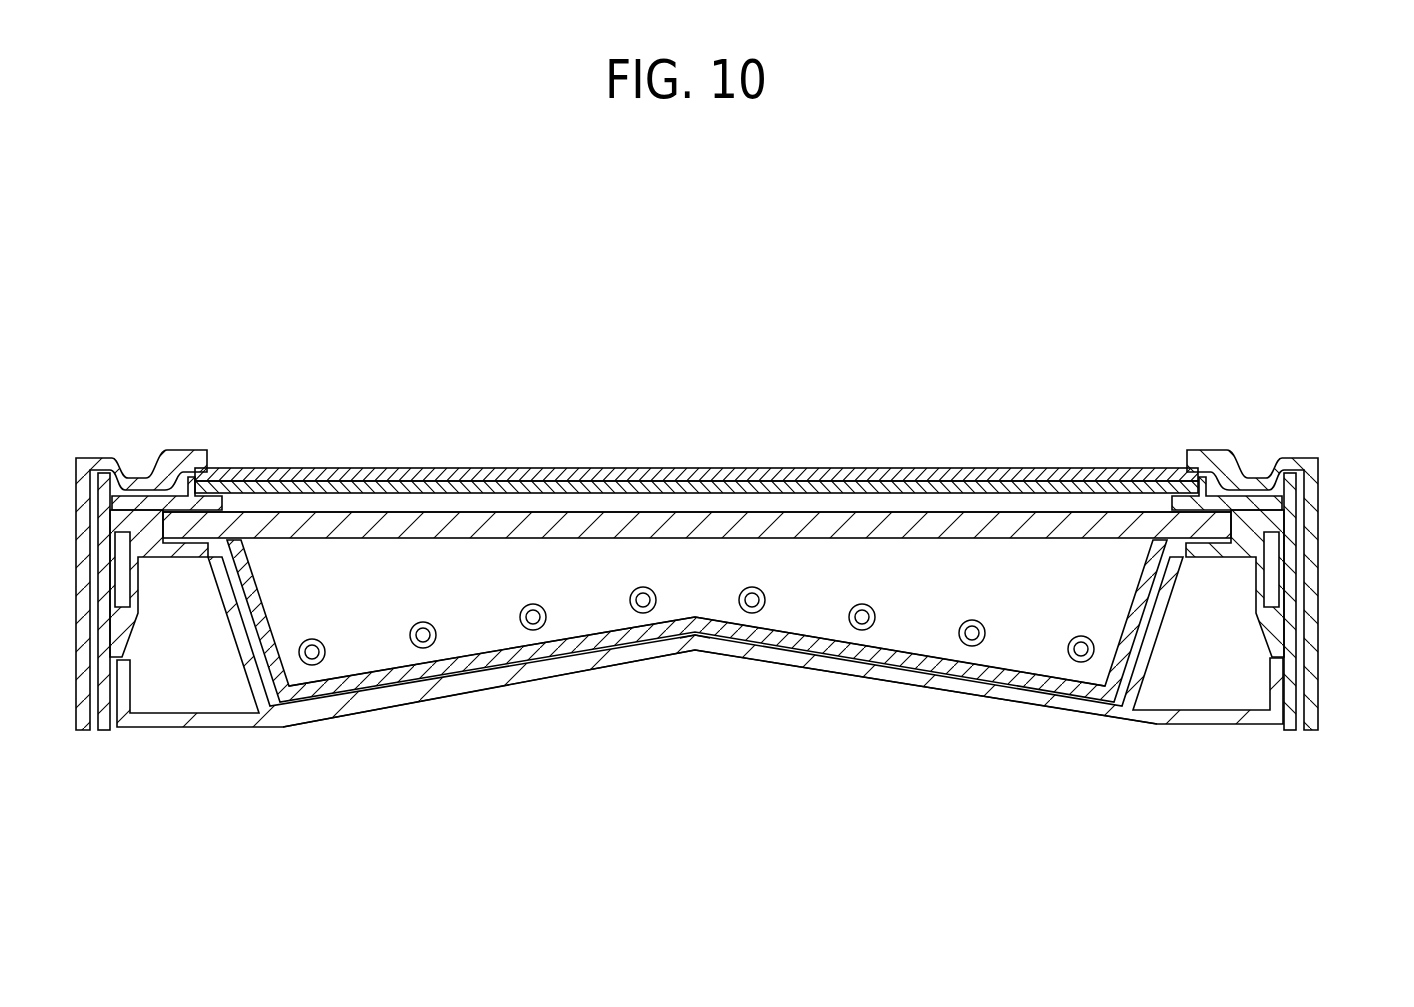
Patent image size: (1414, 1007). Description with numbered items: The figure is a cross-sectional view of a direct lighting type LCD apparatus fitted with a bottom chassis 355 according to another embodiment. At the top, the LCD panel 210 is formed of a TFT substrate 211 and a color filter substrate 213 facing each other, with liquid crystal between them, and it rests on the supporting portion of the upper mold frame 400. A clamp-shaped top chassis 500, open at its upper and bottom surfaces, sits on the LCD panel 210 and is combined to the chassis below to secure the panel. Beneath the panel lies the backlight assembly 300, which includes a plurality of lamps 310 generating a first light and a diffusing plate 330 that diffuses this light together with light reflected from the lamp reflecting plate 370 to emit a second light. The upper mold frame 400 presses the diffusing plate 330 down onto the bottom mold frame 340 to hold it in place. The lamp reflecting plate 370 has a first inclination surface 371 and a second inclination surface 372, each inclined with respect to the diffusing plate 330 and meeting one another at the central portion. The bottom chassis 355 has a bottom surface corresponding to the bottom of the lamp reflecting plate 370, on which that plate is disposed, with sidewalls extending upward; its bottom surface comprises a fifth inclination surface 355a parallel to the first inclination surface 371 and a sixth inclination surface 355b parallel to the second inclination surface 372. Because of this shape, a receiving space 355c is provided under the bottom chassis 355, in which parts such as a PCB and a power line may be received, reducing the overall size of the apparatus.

The LCD panel 210 is at (696, 411).
The TFT substrate 211 is at (612, 468).
The color filter substrate 213 is at (597, 378).
The backlight assembly 300 is at (700, 673).
The lamp 310 is at (975, 648).
The diffusing plate 330 is at (943, 528).
The bottom mold frame 340 is at (1278, 512).
The bottom chassis 355 is at (700, 674).
The fifth inclination surface 355a is at (397, 698).
The sixth inclination surface 355b is at (820, 660).
The receiving space 355c is at (690, 680).
The lamp reflecting plate 370 is at (697, 661).
The first inclination surface 371 is at (593, 644).
The second inclination surface 372 is at (805, 646).
The upper mold frame 400 is at (1276, 501).
The top chassis 500 is at (1288, 456).